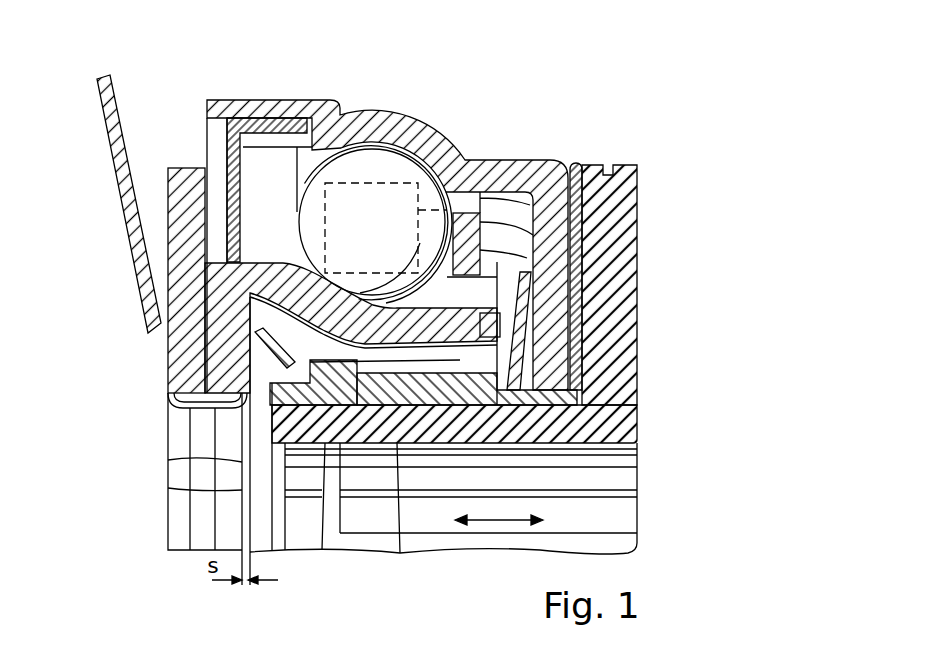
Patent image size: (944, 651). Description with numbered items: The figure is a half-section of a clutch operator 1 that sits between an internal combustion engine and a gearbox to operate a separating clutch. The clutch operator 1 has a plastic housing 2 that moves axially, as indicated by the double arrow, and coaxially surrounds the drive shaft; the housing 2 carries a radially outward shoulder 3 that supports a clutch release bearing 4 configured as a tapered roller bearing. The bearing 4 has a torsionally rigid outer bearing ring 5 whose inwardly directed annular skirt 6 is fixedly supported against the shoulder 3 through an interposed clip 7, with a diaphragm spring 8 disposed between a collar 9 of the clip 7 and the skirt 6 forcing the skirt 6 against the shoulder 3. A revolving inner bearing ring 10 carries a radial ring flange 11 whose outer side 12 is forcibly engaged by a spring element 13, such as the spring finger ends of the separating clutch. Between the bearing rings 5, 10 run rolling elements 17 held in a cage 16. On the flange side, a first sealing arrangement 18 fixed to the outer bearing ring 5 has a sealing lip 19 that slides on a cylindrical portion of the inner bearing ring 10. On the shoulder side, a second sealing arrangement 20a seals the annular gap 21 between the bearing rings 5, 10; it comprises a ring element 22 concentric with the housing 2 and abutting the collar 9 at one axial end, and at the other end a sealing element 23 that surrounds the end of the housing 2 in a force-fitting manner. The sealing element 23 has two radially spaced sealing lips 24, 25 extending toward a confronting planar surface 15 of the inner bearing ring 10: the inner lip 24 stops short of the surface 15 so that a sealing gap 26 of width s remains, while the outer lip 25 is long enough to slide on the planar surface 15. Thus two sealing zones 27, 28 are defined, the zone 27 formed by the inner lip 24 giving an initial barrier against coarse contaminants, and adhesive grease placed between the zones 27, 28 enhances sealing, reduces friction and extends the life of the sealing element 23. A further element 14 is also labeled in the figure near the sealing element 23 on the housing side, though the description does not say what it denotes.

The clutch operator 1 is at (468, 110).
The housing 2 is at (614, 425).
The shoulder 3 is at (628, 240).
The clutch release bearing 4 is at (156, 70).
The outer bearing ring 5 is at (403, 130).
The annular skirt 6 is at (556, 266).
The clip 7 is at (583, 200).
The diaphragm spring 8 is at (627, 339).
The collar 9 is at (540, 388).
The inner bearing ring 10 is at (520, 345).
The ring flange 11 is at (176, 366).
The outer side 12 is at (168, 346).
The spring element 13 is at (133, 218).
The sleeve 14 is at (243, 413).
The planar surface 15 is at (258, 336).
The cage 16 is at (462, 210).
The rolling elements 17 is at (373, 152).
The first sealing arrangement 18 is at (247, 117).
The sealing lip 19 is at (239, 258).
The second sealing arrangement 20a is at (311, 407).
The annular gap 21 is at (541, 303).
The ring element 22 is at (402, 405).
The sealing element 23 is at (268, 416).
The sealing lip 24 is at (207, 397).
The sealing lip 25 is at (355, 441).
The sealing gap 26 is at (243, 491).
The sealing zone 27 is at (170, 398).
The sealing zone 28 is at (258, 352).